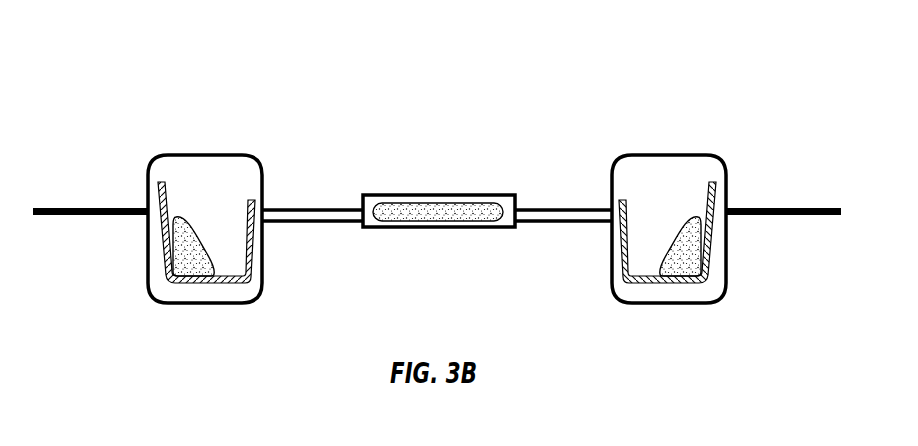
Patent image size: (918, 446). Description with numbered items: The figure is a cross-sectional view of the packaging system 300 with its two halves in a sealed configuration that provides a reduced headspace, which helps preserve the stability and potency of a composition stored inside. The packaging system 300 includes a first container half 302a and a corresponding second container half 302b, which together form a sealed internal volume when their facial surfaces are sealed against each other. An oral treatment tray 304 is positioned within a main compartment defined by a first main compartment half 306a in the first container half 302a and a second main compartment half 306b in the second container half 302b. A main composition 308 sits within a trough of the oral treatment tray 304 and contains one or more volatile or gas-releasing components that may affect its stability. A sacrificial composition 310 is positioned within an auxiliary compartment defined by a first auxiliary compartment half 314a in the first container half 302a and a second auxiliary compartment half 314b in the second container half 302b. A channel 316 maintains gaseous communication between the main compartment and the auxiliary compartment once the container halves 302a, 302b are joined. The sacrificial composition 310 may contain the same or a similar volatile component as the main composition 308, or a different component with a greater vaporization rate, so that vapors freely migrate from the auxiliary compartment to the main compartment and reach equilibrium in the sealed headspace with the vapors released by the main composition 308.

The packaging system 300 is at (266, 94).
The first container half 302a is at (148, 262).
The second container half 302b is at (165, 157).
The oral treatment tray 304 is at (243, 266).
The first main compartment half 306a is at (193, 290).
The second main compartment half 306b is at (213, 193).
The main composition 308 is at (187, 243).
The sacrificial composition 310 is at (425, 212).
The first auxiliary compartment half 314a is at (442, 228).
The second auxiliary compartment half 314b is at (408, 196).
The channel 316 is at (543, 218).